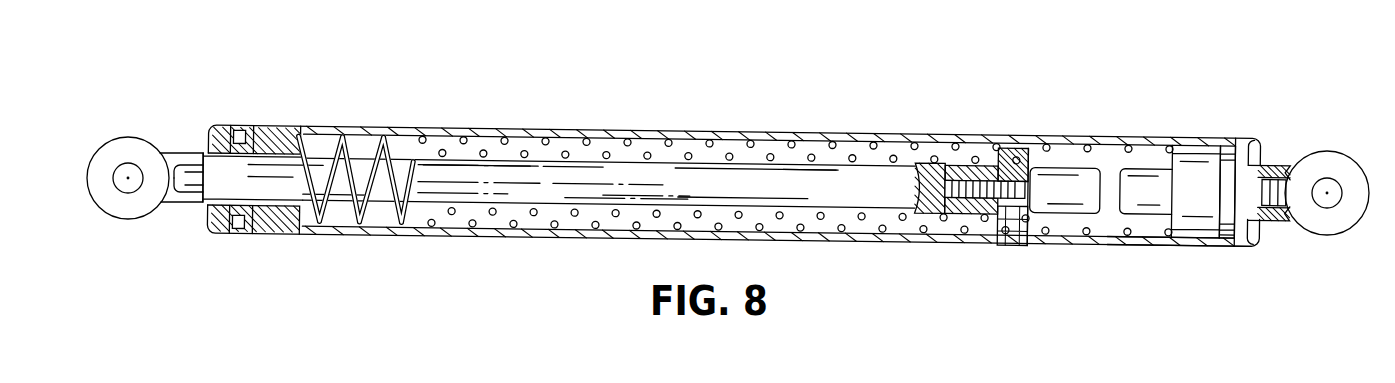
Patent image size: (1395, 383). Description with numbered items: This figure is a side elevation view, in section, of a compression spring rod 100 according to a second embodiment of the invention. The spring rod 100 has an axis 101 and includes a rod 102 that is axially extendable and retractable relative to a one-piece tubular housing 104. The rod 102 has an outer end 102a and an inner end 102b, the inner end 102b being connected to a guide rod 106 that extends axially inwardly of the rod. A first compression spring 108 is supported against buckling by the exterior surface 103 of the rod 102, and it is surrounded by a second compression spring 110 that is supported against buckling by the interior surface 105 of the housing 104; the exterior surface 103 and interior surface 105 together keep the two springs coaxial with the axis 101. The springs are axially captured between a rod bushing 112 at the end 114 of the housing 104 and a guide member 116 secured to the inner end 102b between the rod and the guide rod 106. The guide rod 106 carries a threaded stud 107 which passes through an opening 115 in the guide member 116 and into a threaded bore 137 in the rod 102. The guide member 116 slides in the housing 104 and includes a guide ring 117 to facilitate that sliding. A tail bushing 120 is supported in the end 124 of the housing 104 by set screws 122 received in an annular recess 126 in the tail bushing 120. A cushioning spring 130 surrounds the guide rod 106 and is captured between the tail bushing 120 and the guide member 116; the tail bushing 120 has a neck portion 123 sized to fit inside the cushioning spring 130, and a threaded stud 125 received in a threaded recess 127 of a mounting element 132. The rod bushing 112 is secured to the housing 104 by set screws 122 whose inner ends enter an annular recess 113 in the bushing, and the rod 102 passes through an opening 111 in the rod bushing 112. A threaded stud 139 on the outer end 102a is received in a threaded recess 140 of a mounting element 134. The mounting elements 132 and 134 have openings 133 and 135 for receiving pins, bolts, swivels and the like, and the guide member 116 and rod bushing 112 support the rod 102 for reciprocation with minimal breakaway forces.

The compression spring rod 100 is at (658, 77).
The axis 101 is at (537, 186).
The rod 102 is at (732, 160).
The outer end 102a is at (212, 200).
The inner end 102b is at (975, 210).
The exterior surface 103 is at (675, 160).
The tubular housing 104 is at (812, 140).
The interior surface 105 is at (567, 138).
The guide rod 106 is at (1090, 168).
The threaded stud 107 is at (922, 206).
The first compression spring 108 is at (862, 160).
The second compression spring 110 is at (886, 142).
The opening 111 is at (303, 212).
The rod bushing 112 is at (282, 135).
The annular recess 113 is at (245, 218).
The end 114 is at (228, 128).
The opening 115 is at (1040, 192).
The guide member 116 is at (1023, 234).
The guide ring 117 is at (1010, 152).
The tail bushing 120 is at (1206, 243).
The set screws 122 is at (240, 130).
The neck portion 123 is at (1142, 180).
The end 124 is at (1243, 140).
The threaded stud 125 is at (1283, 172).
The annular recess 126 is at (1226, 232).
The threaded recess 127 is at (1275, 205).
The cushioning spring 130 is at (1145, 238).
The mounting element 132 is at (1330, 236).
The opening 133 is at (1328, 190).
The mounting element 134 is at (125, 126).
The opening 135 is at (128, 186).
The threaded bore 137 is at (965, 172).
The threaded stud 139 is at (188, 190).
The threaded recess 140 is at (192, 166).